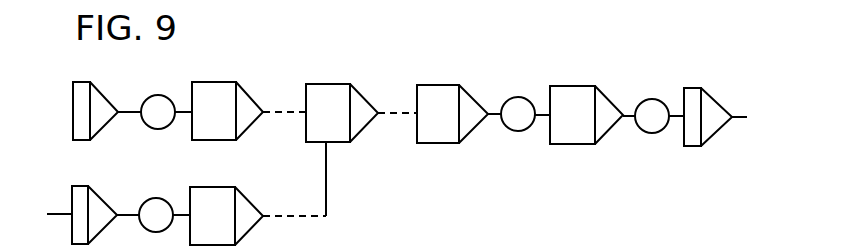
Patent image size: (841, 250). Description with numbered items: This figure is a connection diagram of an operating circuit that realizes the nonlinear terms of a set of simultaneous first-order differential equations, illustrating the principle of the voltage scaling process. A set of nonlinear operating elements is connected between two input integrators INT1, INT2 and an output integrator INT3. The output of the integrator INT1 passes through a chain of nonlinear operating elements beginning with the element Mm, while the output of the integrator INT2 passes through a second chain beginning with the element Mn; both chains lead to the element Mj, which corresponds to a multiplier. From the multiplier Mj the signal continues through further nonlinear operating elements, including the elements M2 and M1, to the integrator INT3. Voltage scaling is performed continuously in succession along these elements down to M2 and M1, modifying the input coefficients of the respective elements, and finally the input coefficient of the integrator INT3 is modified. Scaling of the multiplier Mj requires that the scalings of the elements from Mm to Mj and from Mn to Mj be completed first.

The integrator INT1 is at (103, 99).
The integrator INT2 is at (100, 201).
The integrator INT3 is at (708, 103).
The nonlinear operating element Mm is at (227, 99).
The nonlinear operating element Mn is at (226, 202).
The multiplier Mj is at (342, 99).
The nonlinear operating element M2 is at (452, 101).
The nonlinear operating element M1 is at (586, 102).